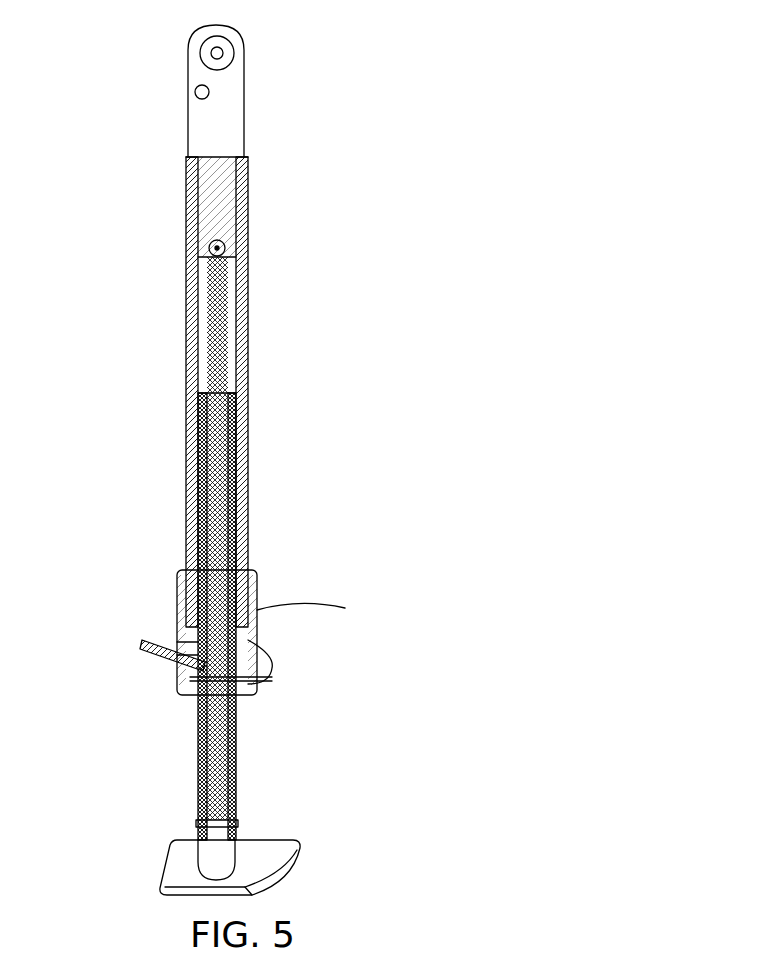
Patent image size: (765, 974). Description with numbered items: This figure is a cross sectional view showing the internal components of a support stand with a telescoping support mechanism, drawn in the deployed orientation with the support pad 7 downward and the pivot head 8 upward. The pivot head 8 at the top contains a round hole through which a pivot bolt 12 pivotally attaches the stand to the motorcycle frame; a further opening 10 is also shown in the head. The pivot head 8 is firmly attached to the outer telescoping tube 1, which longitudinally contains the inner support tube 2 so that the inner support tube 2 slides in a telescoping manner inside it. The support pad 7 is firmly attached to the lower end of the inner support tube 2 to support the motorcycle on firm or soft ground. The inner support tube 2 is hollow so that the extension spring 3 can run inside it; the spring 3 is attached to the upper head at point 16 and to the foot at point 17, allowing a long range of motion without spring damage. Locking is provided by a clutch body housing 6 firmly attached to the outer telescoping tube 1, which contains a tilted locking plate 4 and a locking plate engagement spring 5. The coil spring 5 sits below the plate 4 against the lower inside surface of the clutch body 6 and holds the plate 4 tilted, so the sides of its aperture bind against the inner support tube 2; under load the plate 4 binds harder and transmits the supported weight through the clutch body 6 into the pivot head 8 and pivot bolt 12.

The outer telescoping tube 1 is at (248, 261).
The inner support tube 2 is at (247, 466).
The extension spring 3 is at (213, 330).
The locking plate 4 is at (145, 643).
The locking plate engagement spring 5 is at (178, 678).
The clutch body housing 6 is at (271, 632).
The support pad 7 is at (258, 836).
The pivot head 8 is at (245, 128).
The hole 10 is at (192, 82).
The pivot bolt 12 is at (232, 44).
The spring attachment point on upper head 16 is at (213, 247).
The spring attachment point on foot 17 is at (197, 826).